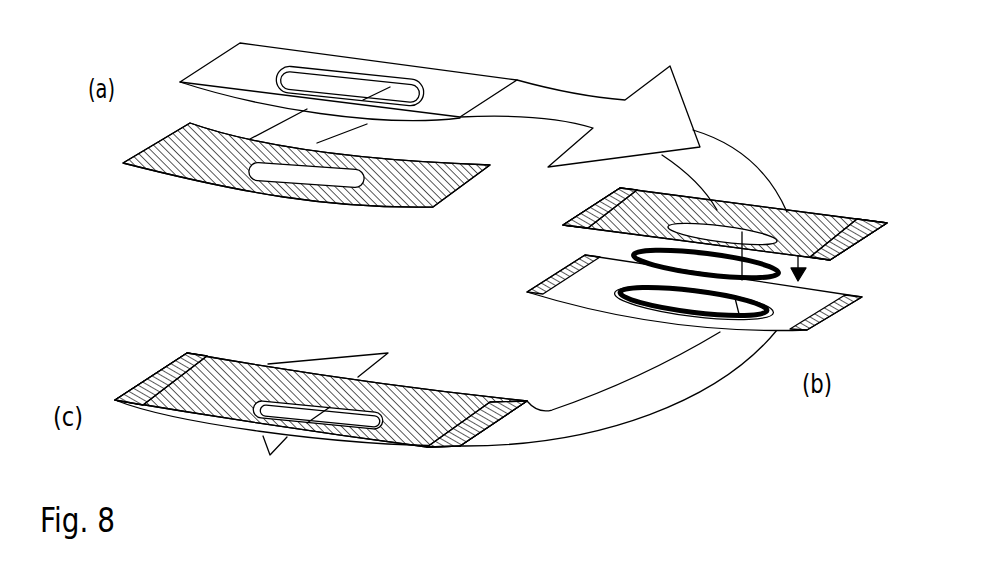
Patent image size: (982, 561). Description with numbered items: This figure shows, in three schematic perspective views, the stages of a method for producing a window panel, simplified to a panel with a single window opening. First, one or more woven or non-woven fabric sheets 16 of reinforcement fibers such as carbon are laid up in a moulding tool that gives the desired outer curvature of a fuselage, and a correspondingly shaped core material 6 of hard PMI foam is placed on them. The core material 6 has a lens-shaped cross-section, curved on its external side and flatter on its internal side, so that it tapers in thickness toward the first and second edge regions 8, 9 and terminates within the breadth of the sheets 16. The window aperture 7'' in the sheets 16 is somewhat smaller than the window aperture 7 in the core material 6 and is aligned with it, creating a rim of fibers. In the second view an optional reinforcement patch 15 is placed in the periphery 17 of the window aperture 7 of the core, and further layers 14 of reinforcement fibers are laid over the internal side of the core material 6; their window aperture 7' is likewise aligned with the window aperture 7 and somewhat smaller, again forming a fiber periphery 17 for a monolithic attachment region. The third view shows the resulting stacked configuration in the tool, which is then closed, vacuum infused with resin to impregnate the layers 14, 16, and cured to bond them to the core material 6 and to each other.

The core material 6 is at (215, 72).
The window aperture 7 is at (350, 53).
The window aperture 7' is at (722, 175).
The window aperture 7'' is at (306, 210).
The first edge region 8 is at (550, 283).
The second edge region 9 is at (823, 322).
The layers of reinforcement fibers 14 is at (813, 224).
The reinforcement patch 15 is at (805, 277).
The fabric sheets 16 is at (178, 172).
The periphery 17 is at (623, 305).